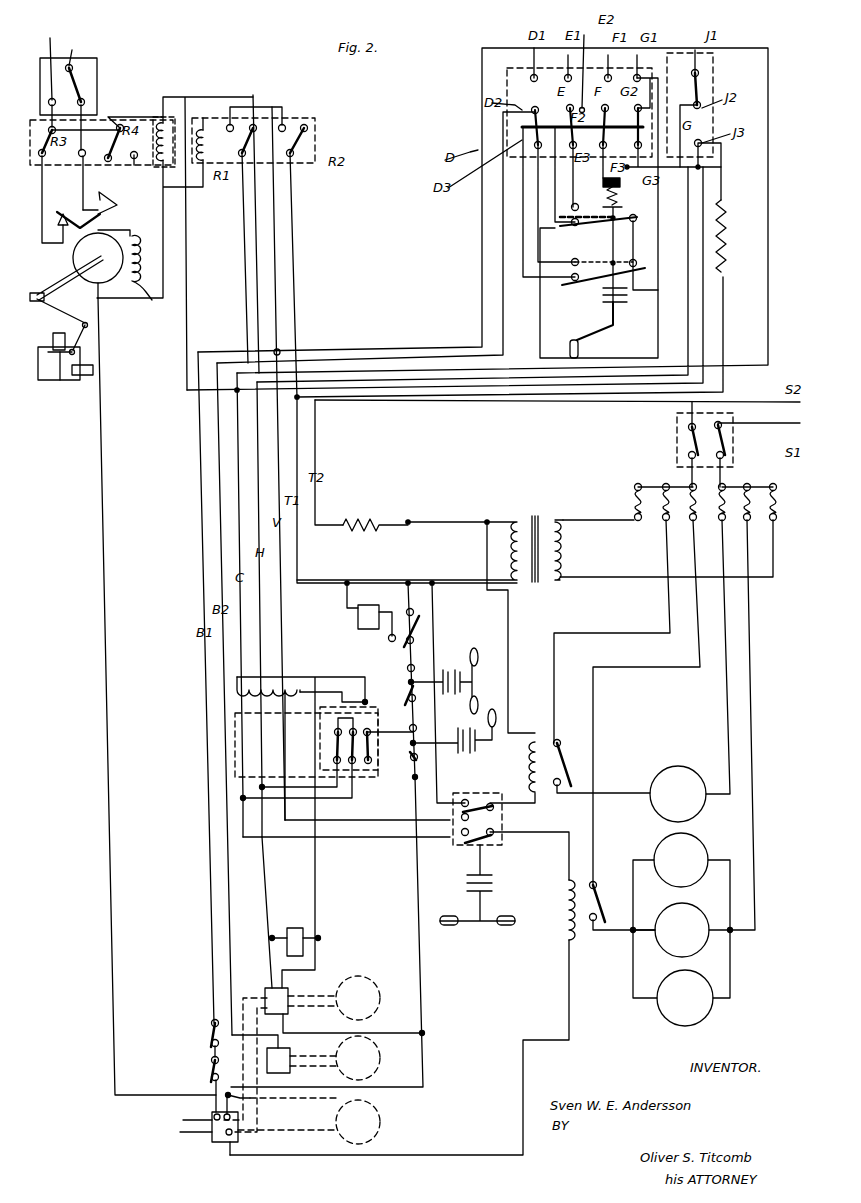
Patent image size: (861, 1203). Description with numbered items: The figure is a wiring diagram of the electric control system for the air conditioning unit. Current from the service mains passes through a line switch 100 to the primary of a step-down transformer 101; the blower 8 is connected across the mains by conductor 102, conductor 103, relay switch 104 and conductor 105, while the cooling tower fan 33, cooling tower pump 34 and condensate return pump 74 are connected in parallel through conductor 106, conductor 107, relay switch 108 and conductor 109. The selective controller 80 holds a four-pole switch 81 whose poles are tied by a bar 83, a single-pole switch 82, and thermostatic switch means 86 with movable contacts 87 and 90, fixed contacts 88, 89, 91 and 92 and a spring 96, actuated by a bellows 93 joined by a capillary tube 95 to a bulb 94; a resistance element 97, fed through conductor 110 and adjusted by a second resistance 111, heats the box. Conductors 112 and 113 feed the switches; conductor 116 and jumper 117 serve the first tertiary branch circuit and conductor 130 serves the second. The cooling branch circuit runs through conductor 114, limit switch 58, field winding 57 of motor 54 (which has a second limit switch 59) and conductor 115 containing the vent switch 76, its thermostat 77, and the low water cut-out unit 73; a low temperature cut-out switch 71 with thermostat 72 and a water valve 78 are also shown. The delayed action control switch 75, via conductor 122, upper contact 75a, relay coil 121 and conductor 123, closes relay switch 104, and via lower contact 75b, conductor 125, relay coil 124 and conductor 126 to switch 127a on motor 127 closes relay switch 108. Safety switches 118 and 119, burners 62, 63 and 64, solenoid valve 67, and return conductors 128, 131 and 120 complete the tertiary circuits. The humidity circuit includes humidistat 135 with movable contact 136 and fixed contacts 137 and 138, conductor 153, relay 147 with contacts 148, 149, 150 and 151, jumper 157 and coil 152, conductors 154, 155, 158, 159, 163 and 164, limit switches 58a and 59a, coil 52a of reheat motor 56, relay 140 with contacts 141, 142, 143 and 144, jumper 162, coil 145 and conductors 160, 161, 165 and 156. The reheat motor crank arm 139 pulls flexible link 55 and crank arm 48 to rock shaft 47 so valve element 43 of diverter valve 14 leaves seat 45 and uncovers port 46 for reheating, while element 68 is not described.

The humidistat 135 is at (100, 58).
The fixed contact 137 is at (36, 69).
The movable contact 136 is at (72, 54).
The fixed contact 138 is at (85, 90).
The conductor 154 is at (48, 108).
The relay 147 is at (30, 148).
The jumper 157 is at (93, 157).
The fixed contact 148 is at (40, 157).
The fixed contact 150 is at (80, 157).
The relay coil 152 is at (135, 138).
The fixed contact 149 is at (114, 169).
The fixed contact 151 is at (142, 168).
The conductor 163 is at (85, 110).
The conductor 158 is at (155, 129).
The conductor 164 is at (82, 200).
The limit switch 59a is at (124, 204).
The conductor 155 is at (42, 212).
The limit switch 58a is at (60, 228).
The reheat motor 56 is at (76, 262).
The crank arm 139 is at (40, 290).
The flexible wire link 55 is at (62, 314).
The coil 52a is at (153, 304).
The crank arm 48 is at (80, 350).
The diverter valve 14 is at (36, 378).
The valve port 46 is at (53, 340).
The rock shaft 47 is at (74, 354).
The valve element 43 is at (55, 380).
The valve seat 45 is at (82, 376).
The conductor 156 is at (108, 590).
The conductor 159 is at (165, 230).
The conductor 153 is at (186, 262).
The relay 140 is at (318, 134).
The relay coil 145 is at (207, 128).
The conductor 165 is at (190, 96).
The fixed contact 143 is at (233, 124).
The jumper 162 is at (257, 95).
The fixed contact 141 is at (250, 125).
The fixed contact 144 is at (286, 124).
The fixed contact 142 is at (308, 124).
The conductor 161 is at (280, 222).
The conductor 160 is at (297, 250).
The selective controller 80 is at (467, 77).
The bar 83 is at (482, 113).
The four-pole double-throw switch 81 is at (482, 132).
The single-pole double-throw switch 82 is at (702, 82).
The fixed contact 88 is at (556, 295).
The thermostatically operated switch means 86 is at (561, 284).
The movable contact 87 is at (594, 282).
The fixed contact 89 is at (604, 256).
The movable contact 90 is at (585, 218).
The fixed contact 91 is at (573, 228).
The fixed contact 92 is at (598, 230).
The spring 96 is at (637, 222).
The conductor 130 is at (540, 230).
The conductor 116 is at (560, 150).
The jumper 117 is at (538, 150).
The expansible bellows 93 is at (624, 293).
The capillary tube 95 is at (606, 330).
The bulb 94 is at (580, 350).
The conductor 112 is at (688, 175).
The conductor 113 is at (663, 208).
The conductor 110 is at (722, 182).
The electric resistance element 97 is at (727, 240).
The line switch 100 is at (728, 440).
The step-down transformer 101 is at (545, 516).
The second resistance 111 is at (372, 512).
The low water cut-out unit 73 is at (420, 616).
The conductor 122 is at (433, 627).
The vent switch 76 is at (408, 688).
The thermostat 77 is at (458, 668).
The thermostat 72 is at (464, 726).
The conductor 115 is at (399, 660).
The field winding 57 is at (292, 680).
The electric motor 54 is at (235, 746).
The limit switch 59 is at (333, 747).
The limit switch 58 is at (368, 764).
The low temperature cut-out switch 71 is at (410, 752).
The conductor 114 is at (335, 798).
The relay coil 121 is at (528, 752).
The conductor 123 is at (509, 660).
The upper movable contact 75a is at (474, 793).
The lower contact 75b is at (458, 847).
The delayed action control switch 75 is at (472, 885).
The conductor 125 is at (562, 830).
The relay coil 124 is at (561, 886).
The conductor 126 is at (569, 993).
The conductor 120 is at (425, 1060).
The conductor 105 is at (572, 696).
The relay switch 104 is at (582, 736).
The conductor 103 is at (619, 792).
The conductor 109 is at (592, 838).
The relay switch 108 is at (598, 890).
The conductor 107 is at (612, 933).
The conductor 102 is at (728, 682).
The conductor 106 is at (760, 766).
The blower 8 is at (680, 768).
The cooling tower fan 33 is at (700, 850).
The cooling tower pump 34 is at (702, 912).
The condensate return pump 74 is at (712, 1013).
The magnetically operated water valve 78 is at (294, 928).
The relay 68 is at (292, 990).
The gas burner 64 is at (374, 982).
The conductor 131 is at (396, 1030).
The solenoid valve 67 is at (290, 1060).
The gas burner 63 is at (380, 1057).
The gas burner 62 is at (382, 1118).
The safety switch 118 is at (208, 1038).
The safety switch 119 is at (207, 1070).
The motor 127 is at (215, 1145).
The switch 127a is at (194, 1142).
The conductor 128 is at (268, 1100).